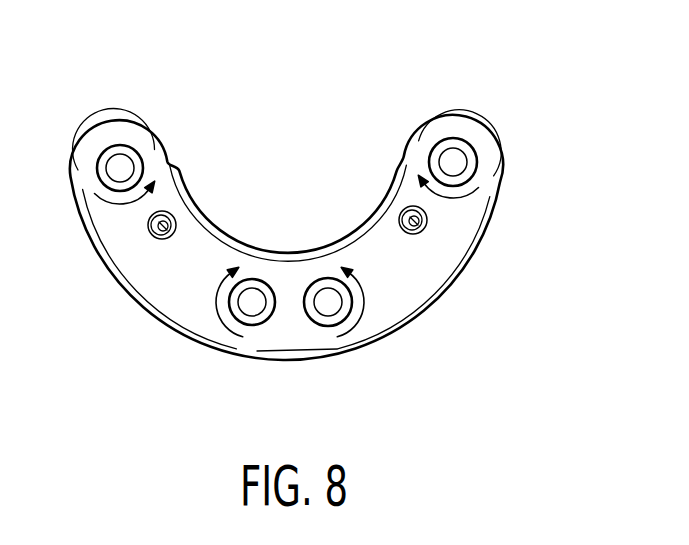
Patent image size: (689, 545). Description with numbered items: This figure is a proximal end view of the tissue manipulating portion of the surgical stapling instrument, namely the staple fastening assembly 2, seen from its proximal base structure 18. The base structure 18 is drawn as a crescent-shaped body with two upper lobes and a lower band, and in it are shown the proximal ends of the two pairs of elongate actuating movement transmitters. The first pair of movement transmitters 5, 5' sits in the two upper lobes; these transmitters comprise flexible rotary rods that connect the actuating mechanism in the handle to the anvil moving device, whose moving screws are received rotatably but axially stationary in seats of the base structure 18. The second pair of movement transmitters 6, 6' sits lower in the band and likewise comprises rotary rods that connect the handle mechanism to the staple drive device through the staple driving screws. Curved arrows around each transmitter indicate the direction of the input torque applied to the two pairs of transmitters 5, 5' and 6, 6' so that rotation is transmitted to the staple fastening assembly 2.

The staple fastening assembly 2 is at (314, 222).
The first elongate actuating movement transmitter 5 is at (102, 119).
The first elongate actuating movement transmitter 5' is at (482, 116).
The second elongate actuating movement transmitter 6 is at (248, 344).
The second elongate actuating movement transmitter 6' is at (346, 340).
The proximal base structure 18 is at (428, 262).